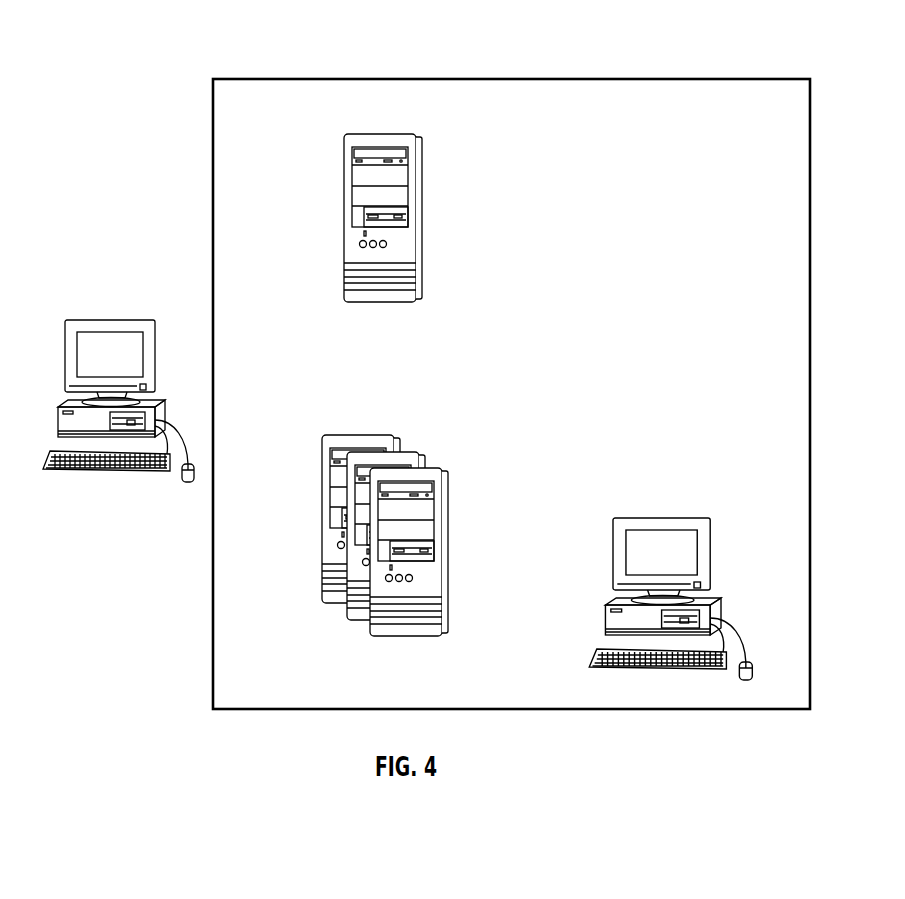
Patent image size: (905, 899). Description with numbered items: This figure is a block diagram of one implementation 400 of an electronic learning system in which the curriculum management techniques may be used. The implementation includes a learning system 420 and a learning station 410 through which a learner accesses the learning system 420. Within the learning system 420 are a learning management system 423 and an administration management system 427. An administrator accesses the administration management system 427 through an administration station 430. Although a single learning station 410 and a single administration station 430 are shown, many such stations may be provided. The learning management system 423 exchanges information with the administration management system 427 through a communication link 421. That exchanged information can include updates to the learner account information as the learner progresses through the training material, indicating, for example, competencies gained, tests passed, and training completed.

The implementation of an ELS 400 is at (113, 38).
The learning station 410 is at (100, 473).
The learning system 420 is at (753, 79).
The communication link 421 is at (252, 266).
The learning management system 423 is at (421, 207).
The administration management system 427 is at (418, 462).
The administration station 430 is at (712, 562).